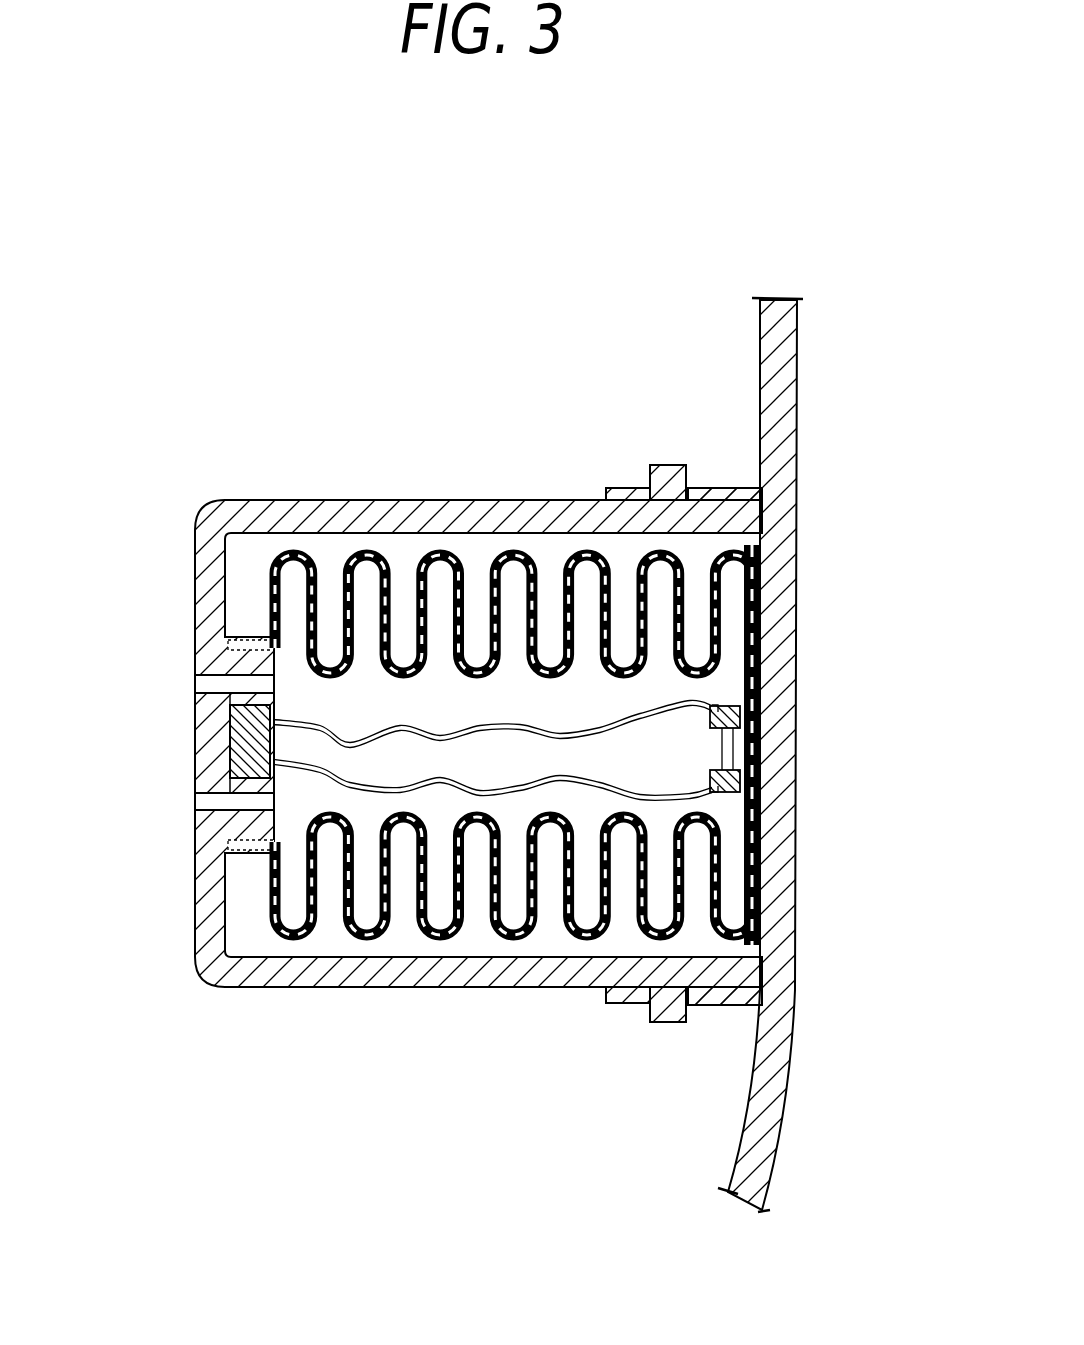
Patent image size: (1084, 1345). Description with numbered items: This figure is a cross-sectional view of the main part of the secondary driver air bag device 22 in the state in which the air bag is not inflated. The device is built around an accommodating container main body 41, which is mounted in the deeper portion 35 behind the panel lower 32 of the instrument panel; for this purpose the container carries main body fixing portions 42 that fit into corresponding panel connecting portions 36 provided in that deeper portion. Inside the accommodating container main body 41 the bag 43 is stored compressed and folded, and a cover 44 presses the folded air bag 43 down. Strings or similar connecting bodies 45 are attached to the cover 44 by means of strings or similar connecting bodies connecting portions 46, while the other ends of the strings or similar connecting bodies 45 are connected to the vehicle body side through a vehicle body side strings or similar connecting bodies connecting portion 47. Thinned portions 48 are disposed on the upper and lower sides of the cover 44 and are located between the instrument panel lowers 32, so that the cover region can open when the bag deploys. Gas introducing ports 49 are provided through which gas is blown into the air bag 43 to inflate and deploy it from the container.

The secondary driver air bag device 22 is at (243, 340).
The panel lower 32 is at (805, 390).
The deeper portion 35 is at (533, 435).
The panel connecting portion 36 is at (612, 486).
The accommodating container main body 41 is at (183, 477).
The main body fixing portion 42 is at (668, 464).
The bag 43 is at (488, 583).
The cover 44 is at (783, 735).
The strings or similar connecting bodies 45 is at (518, 790).
The strings or similar connecting bodies connecting portions 46 is at (712, 776).
The vehicle body side strings or similar connecting bodies connecting portion 47 is at (215, 742).
The thinned portion 48 is at (760, 537).
The gas introducing port 49 is at (203, 680).